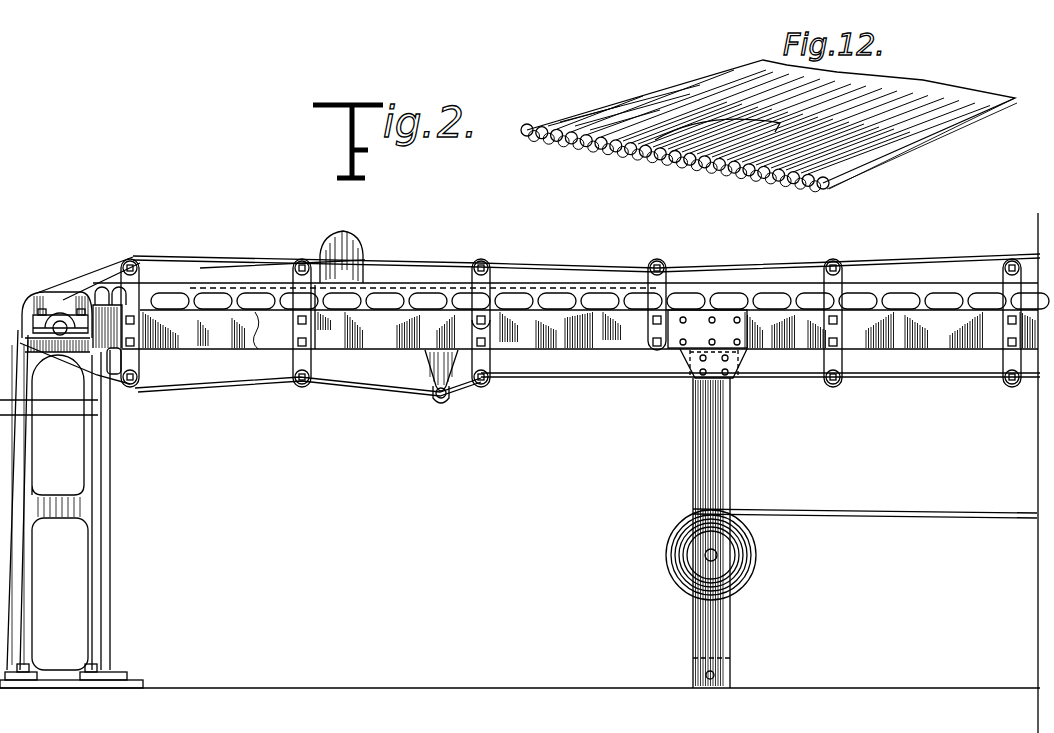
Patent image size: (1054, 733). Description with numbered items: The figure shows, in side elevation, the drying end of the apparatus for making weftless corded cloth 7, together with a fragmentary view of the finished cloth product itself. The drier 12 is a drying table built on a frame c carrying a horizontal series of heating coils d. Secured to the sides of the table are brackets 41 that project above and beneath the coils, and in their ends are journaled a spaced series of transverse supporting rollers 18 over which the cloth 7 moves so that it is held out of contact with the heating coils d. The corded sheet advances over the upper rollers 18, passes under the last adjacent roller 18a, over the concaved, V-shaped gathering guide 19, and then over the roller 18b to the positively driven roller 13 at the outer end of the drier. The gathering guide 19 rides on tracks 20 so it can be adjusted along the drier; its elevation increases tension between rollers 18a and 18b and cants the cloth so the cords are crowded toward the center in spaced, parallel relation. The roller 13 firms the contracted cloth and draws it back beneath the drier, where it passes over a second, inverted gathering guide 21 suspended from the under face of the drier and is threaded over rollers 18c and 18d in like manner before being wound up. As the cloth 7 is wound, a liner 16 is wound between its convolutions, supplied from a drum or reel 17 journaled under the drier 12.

The weftless corded cloth 7 is at (957, 257).
The drier 12 is at (627, 322).
The roller 13 is at (60, 300).
The liner 16 is at (752, 563).
The drum or reel 17 is at (705, 556).
The transverse supporting rollers 18 is at (832, 265).
The roller 18a is at (490, 262).
The roller 18b is at (133, 256).
The roller 18c is at (303, 385).
The roller 18d is at (483, 383).
The gathering guide 19 is at (327, 250).
The tracks 20 is at (378, 287).
The second gathering guide 21 is at (432, 373).
The brackets 41 is at (127, 283).
The frame c is at (567, 327).
The heating coils d is at (727, 300).